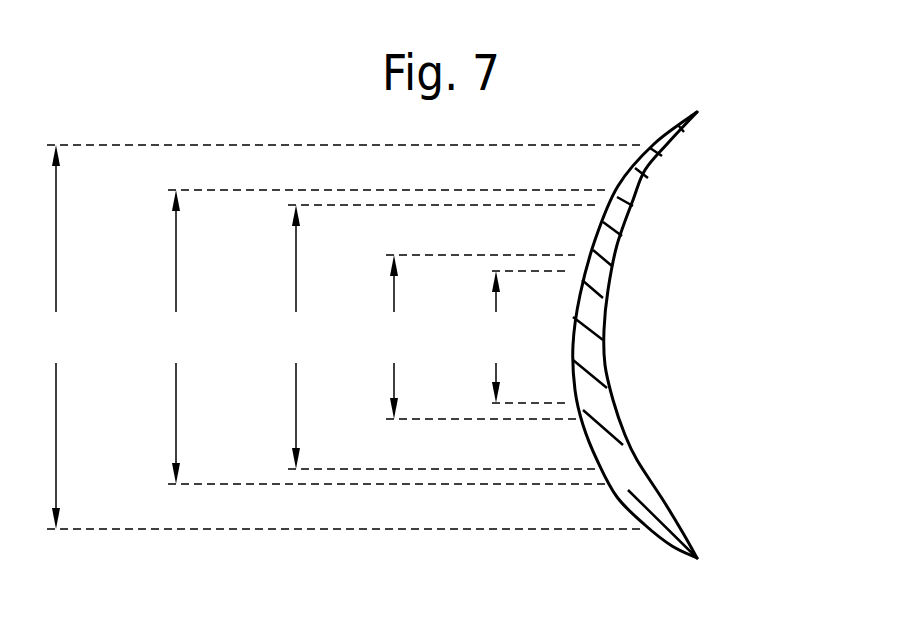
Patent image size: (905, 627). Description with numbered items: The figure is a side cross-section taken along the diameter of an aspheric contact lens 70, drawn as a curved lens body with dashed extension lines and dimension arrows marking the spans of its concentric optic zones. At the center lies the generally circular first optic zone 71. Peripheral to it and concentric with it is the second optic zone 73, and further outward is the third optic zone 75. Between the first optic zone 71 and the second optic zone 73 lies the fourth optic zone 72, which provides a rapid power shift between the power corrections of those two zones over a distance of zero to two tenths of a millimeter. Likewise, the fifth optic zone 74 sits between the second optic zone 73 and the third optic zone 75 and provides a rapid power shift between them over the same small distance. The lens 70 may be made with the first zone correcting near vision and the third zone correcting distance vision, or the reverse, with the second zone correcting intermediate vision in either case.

The aspheric contact lens 70 is at (735, 112).
The first optic zone 71 is at (520, 337).
The fourth optic zone 72 is at (472, 337).
The second optic zone 73 is at (432, 337).
The fifth optic zone 74 is at (378, 337).
The third optic zone 75 is at (335, 337).